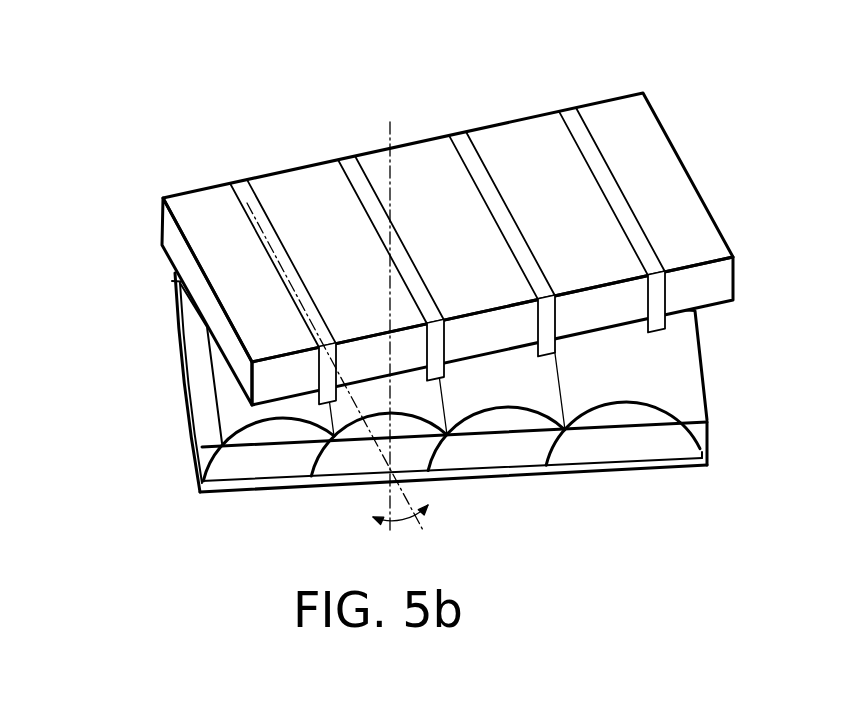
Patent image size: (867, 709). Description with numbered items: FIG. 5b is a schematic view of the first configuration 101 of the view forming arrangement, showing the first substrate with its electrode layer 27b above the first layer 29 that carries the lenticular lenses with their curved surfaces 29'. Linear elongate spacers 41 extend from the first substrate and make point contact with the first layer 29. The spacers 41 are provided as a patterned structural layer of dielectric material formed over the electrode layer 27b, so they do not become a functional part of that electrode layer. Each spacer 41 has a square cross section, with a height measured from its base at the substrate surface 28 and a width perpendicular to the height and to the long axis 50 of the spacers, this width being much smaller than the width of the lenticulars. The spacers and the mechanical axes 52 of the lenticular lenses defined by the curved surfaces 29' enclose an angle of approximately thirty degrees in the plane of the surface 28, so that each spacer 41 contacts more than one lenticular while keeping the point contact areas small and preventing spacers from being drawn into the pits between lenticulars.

The first configuration 101 is at (125, 137).
The electrode layer 27b is at (618, 115).
The substrate surface 28 is at (719, 304).
The first layer 29 is at (480, 457).
The curved surfaces 29' is at (451, 412).
The elongate spacers 41 is at (660, 323).
The long axis of the spacers 50 is at (232, 177).
The mechanical axes of the lenticular lenses 52 is at (391, 314).